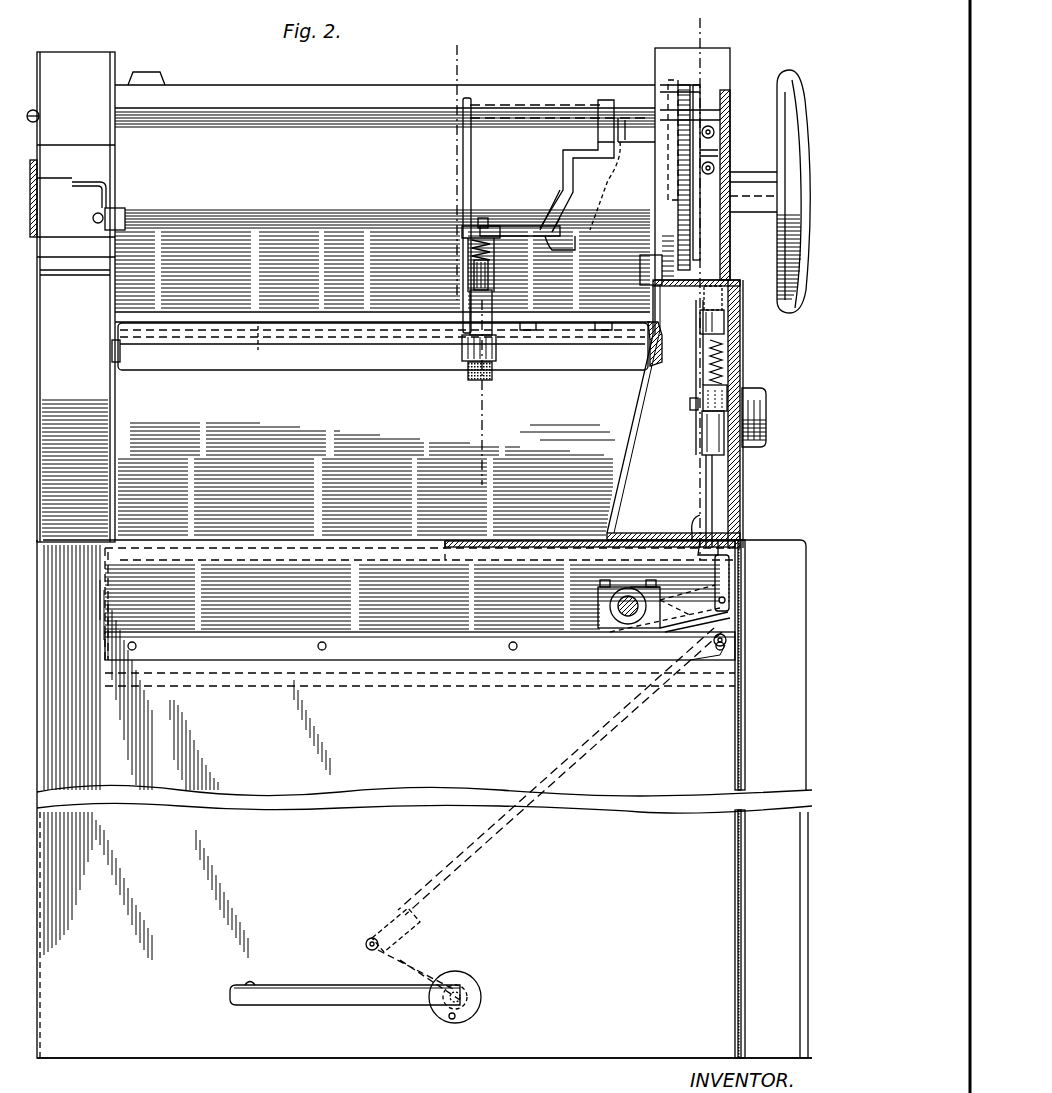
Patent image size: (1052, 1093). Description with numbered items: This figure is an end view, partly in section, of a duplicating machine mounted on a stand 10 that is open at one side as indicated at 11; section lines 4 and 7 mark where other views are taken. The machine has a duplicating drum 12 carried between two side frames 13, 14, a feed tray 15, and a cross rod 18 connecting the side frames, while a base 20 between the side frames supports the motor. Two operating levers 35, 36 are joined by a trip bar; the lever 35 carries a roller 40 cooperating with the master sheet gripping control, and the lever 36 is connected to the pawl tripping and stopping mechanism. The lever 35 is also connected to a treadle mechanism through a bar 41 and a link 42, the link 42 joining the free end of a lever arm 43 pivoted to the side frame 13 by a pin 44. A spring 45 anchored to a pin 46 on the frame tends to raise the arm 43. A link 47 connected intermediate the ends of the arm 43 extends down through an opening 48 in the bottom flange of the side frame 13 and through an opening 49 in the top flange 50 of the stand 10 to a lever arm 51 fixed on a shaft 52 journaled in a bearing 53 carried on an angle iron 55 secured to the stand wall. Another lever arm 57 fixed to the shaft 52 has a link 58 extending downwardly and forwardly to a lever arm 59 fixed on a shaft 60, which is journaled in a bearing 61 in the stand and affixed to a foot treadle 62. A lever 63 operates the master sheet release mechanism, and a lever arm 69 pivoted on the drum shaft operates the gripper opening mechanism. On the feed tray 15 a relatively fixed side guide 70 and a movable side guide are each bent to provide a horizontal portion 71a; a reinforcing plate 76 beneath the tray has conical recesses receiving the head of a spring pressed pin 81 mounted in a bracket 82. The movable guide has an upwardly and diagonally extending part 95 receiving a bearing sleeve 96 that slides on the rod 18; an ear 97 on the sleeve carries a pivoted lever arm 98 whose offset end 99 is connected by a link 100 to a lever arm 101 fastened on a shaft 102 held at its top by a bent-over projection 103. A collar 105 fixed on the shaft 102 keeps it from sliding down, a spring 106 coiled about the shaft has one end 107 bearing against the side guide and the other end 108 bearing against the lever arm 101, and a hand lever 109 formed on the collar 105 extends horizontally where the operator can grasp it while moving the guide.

The stand 10 is at (72, 545).
The open side 11 is at (602, 1035).
The duplicating drum 12 is at (211, 140).
The side frame 13 is at (740, 360).
The side frame 14 is at (66, 540).
The feed tray 15 is at (320, 324).
The cross rod 18 is at (392, 125).
The base 20 is at (642, 520).
The operating lever 35 is at (655, 130).
The operating lever 36 is at (92, 186).
The roller 40 is at (714, 134).
The bar 41 is at (714, 170).
The link 42 is at (699, 316).
The lever arm 43 is at (700, 440).
The pin 44 is at (728, 392).
The spring 45 is at (724, 350).
The pin 46 is at (708, 335).
The link 47 is at (705, 491).
The opening 48 is at (698, 522).
The opening 49 is at (698, 548).
The top flange 50 is at (567, 540).
The lever arm 51 is at (698, 595).
The shaft 52 is at (614, 600).
The bearing 53 is at (598, 607).
The angle iron 55 is at (398, 603).
The lever arm 57 is at (730, 616).
The link 58 is at (584, 744).
The lever arm 59 is at (412, 958).
The shaft 60 is at (468, 1012).
The bearing 61 is at (466, 980).
The foot treadle 62 is at (346, 984).
The lever 63 is at (143, 72).
The lever arm 69 is at (700, 92).
The fixed side guide 70 is at (646, 260).
The horizontal portion 71a is at (598, 330).
The reinforcing plate 76 is at (257, 347).
The spring pressed pin 81 is at (474, 380).
The bracket 82 is at (462, 348).
The upwardly and diagonally extending part 95 is at (462, 185).
The bearing sleeve 96 is at (506, 120).
The ear 97 is at (598, 130).
The lever arm 98 is at (612, 186).
The offset end 99 is at (590, 160).
The link 100 is at (557, 232).
The lever arm 101 is at (520, 228).
The shaft 102 is at (484, 217).
The projection 103 is at (462, 234).
The collar 105 is at (489, 276).
The spring 106 is at (492, 248).
The spring end 107 is at (466, 262).
The spring end 108 is at (549, 245).
The hand lever 109 is at (490, 300).
The section line 4 is at (471, 50).
The section line 7 is at (687, 23).